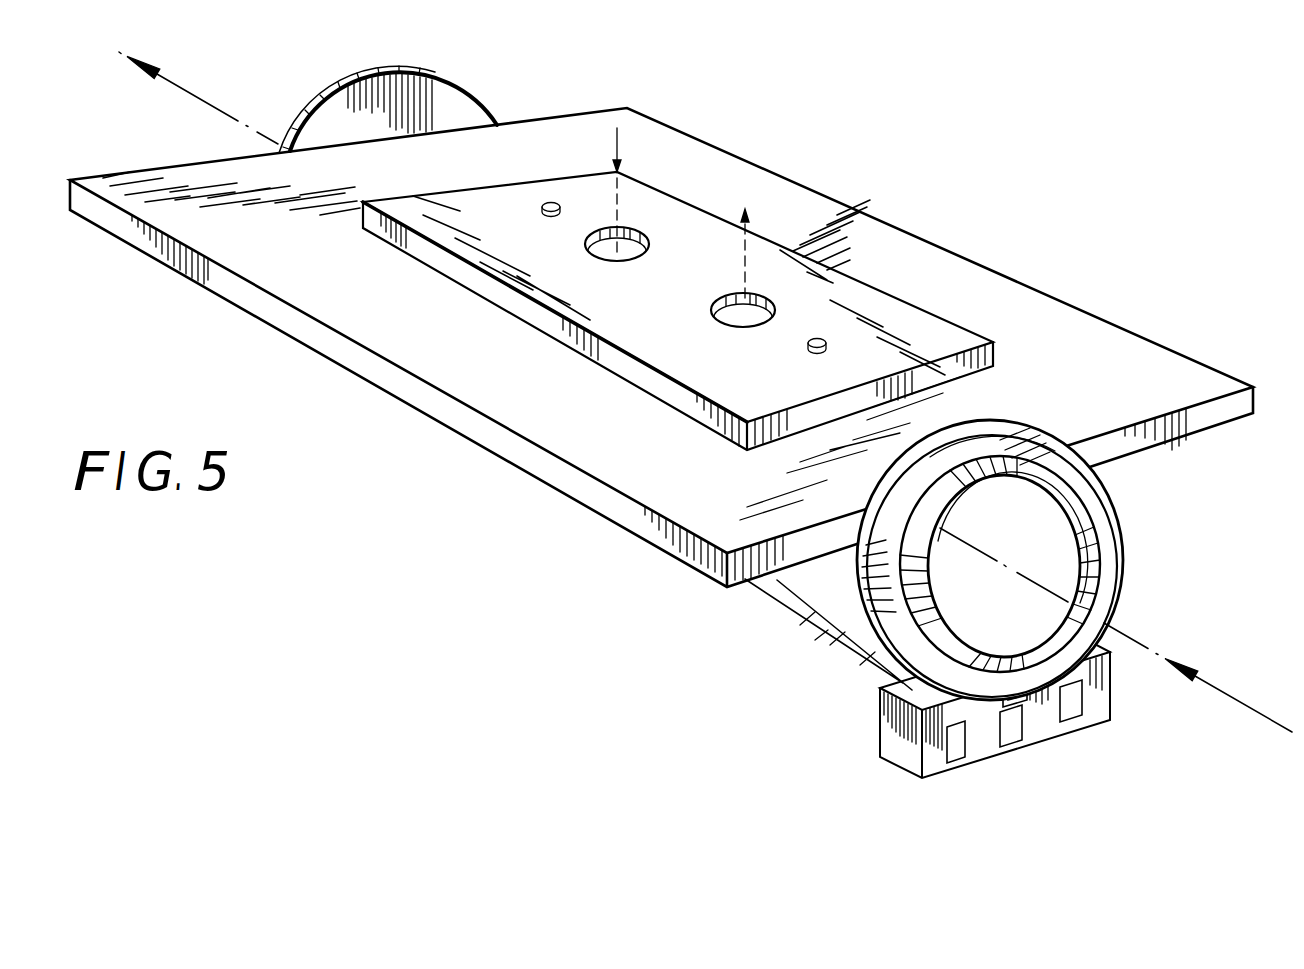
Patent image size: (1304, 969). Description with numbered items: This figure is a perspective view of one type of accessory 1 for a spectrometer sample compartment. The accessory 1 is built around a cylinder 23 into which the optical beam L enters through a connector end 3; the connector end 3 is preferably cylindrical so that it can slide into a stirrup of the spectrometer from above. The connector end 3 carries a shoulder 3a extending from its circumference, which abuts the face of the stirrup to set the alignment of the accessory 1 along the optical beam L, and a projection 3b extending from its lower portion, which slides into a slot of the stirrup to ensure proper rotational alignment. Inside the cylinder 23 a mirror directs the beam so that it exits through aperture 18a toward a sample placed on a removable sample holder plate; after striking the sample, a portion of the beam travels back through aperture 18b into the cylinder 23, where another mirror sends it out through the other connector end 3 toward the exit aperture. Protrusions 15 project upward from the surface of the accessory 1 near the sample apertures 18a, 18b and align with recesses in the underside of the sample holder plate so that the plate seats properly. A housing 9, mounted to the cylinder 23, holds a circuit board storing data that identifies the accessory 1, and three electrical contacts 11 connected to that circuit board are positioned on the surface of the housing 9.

The accessory 1 is at (960, 240).
The connector end 3 is at (438, 93).
The shoulder 3a is at (1028, 428).
The projection 3b is at (1018, 698).
The housing 9 is at (903, 752).
The electrical contacts 11 is at (1073, 713).
The protrusions 15 is at (541, 210).
The aperture 18a is at (712, 318).
The aperture 18b is at (602, 248).
The cylinder 23 is at (820, 603).
The optical beam L is at (705, 389).